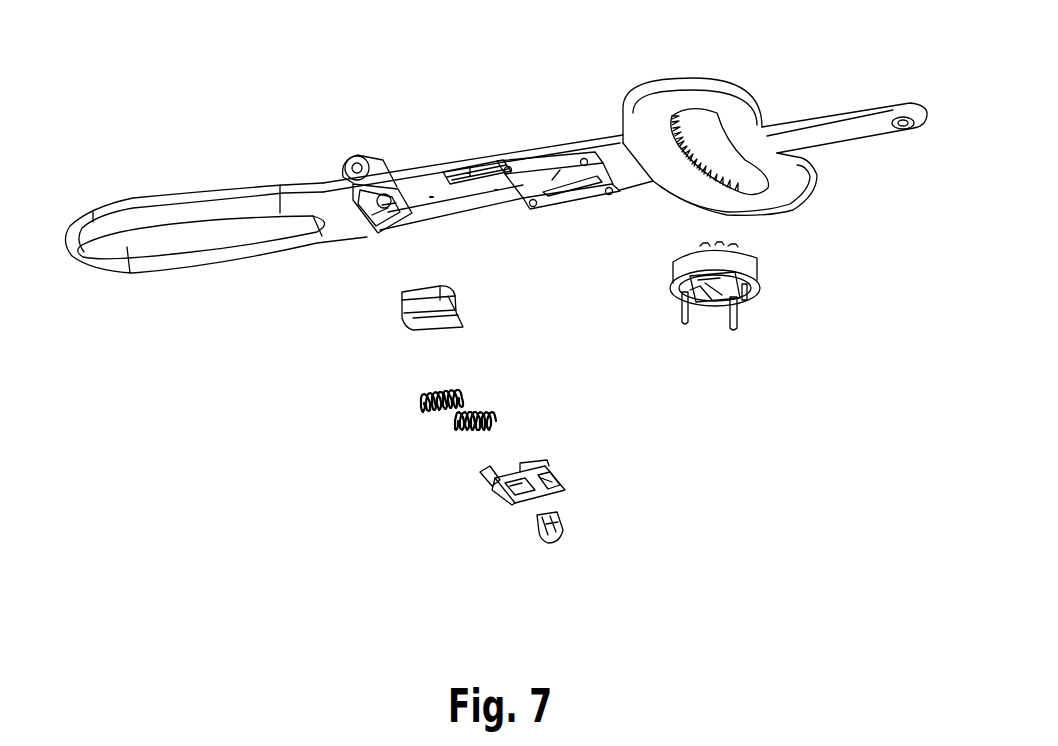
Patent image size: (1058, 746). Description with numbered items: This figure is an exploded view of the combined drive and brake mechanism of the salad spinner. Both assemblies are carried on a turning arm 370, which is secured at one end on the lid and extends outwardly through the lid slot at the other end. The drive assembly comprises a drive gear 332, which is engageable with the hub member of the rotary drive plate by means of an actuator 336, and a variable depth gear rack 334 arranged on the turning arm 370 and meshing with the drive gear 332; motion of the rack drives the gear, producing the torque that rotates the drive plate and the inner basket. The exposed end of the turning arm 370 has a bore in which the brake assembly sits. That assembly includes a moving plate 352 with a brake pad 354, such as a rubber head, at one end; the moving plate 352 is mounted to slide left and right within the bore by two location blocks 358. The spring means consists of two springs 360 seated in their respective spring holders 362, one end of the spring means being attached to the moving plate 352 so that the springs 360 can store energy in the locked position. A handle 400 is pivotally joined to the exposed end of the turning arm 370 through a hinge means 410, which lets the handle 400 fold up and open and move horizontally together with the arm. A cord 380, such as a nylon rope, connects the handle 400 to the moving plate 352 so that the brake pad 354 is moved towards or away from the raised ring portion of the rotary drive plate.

The handle 400 is at (210, 190).
The hinge means 410 is at (354, 157).
The cord 380 is at (387, 186).
The location blocks 358 is at (562, 165).
The turning arm 370 is at (855, 115).
The variable depth gear rack 334 is at (738, 188).
The spring holders 362 is at (405, 313).
The springs 360 is at (420, 410).
The moving plate 352 is at (490, 497).
The brake pad 354 is at (565, 530).
The drive gear 332 is at (742, 305).
The actuator 336 is at (686, 322).